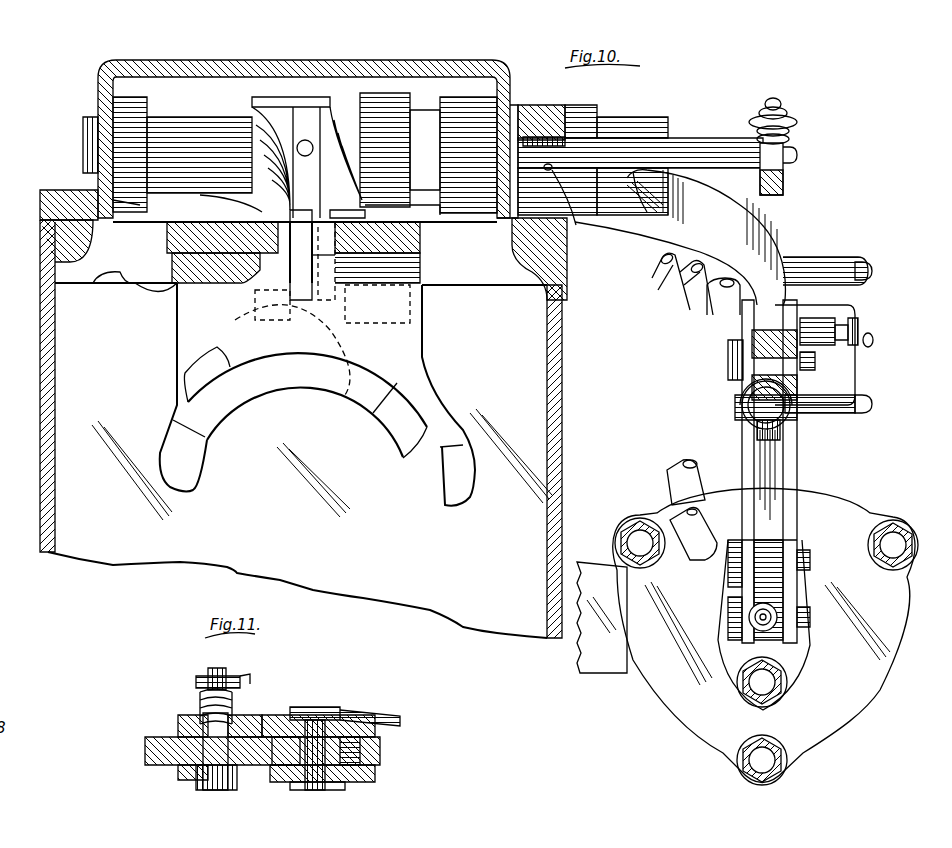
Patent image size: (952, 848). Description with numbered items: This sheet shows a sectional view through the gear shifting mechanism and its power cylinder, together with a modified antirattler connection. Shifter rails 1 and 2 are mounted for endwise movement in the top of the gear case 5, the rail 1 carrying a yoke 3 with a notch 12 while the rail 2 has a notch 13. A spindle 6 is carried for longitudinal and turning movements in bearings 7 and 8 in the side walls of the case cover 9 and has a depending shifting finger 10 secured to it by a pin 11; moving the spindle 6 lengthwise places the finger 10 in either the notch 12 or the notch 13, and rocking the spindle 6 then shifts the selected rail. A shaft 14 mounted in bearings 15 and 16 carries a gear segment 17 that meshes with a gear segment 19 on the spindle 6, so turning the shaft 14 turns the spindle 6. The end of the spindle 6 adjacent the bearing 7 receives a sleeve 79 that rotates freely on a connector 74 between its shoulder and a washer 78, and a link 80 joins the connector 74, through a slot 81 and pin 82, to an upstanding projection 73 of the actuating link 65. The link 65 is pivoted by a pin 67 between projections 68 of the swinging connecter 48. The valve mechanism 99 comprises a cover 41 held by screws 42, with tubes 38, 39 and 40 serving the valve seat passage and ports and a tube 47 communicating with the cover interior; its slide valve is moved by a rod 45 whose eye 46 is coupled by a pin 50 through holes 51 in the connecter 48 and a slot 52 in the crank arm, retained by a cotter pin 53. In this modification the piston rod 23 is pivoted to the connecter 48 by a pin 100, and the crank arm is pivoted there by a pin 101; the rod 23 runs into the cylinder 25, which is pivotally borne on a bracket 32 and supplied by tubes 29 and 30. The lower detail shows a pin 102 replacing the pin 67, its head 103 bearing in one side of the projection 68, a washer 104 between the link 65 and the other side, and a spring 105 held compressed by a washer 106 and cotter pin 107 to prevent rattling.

In FIG. 10, the shifter rail 1 is at (175, 236).
In FIG. 10, the shifter rail 2 is at (405, 262).
In FIG. 10, the yoke 3 is at (228, 407).
In FIG. 10, the gear case 5 is at (55, 320).
In FIG. 10, the spindle 6 is at (208, 125).
In FIG. 10, the bearing 7 is at (440, 405).
In FIG. 10, the bearing 8 is at (145, 108).
In FIG. 10, the case cover 9 is at (246, 73).
In FIG. 10, the shifting finger 10 is at (295, 272).
In FIG. 10, the pin 11 is at (313, 148).
In FIG. 10, the notch 12 is at (318, 310).
In FIG. 10, the notch 13 is at (326, 250).
In FIG. 10, the shaft 14 is at (210, 194).
In FIG. 10, the bearing 15 is at (580, 118).
In FIG. 10, the bearing 16 is at (140, 200).
In FIG. 10, the gear segment 17 is at (346, 214).
In FIG. 10, the gear segment 19 is at (380, 203).
In FIG. 10, the connecting rod 23 is at (768, 630).
In FIG. 10, the cylinder 25 is at (675, 720).
In FIG. 10, the tube 29 is at (688, 548).
In FIG. 10, the tube 30 is at (668, 483).
In FIG. 10, the bracket 32 is at (605, 670).
In FIG. 10, the tube 38 is at (690, 300).
In FIG. 10, the tube 39 is at (718, 305).
In FIG. 10, the tube 40 is at (672, 285).
In FIG. 10, the cover 41 is at (825, 257).
In FIG. 10, the screws 42 is at (873, 270).
In FIG. 11, the rod 45 is at (385, 716).
In FIG. 10, the eye 46 is at (818, 318).
In FIG. 10, the tube 47 is at (866, 347).
In FIG. 11, the swinging connecter 48 is at (345, 755).
In FIG. 10, the pin 50 is at (818, 360).
In FIG. 11, the pin 50 is at (312, 788).
In FIG. 11, the holes 51 is at (302, 720).
In FIG. 11, the slot 52 is at (282, 782).
In FIG. 11, the cotter pin 53 is at (332, 785).
In FIG. 10, the actuating link 65 is at (765, 330).
In FIG. 11, the actuating link 65 is at (146, 753).
In FIG. 10, the pin 67 is at (730, 362).
In FIG. 10, the projections 68 is at (742, 392).
In FIG. 11, the projections 68 is at (180, 716).
In FIG. 10, the projection 73 is at (783, 170).
In FIG. 10, the connector 74 is at (530, 125).
In FIG. 10, the washer 78 is at (786, 512).
In FIG. 10, the sleeve 79 is at (740, 418).
In FIG. 10, the link 80 is at (708, 150).
In FIG. 10, the slot 81 is at (556, 135).
In FIG. 10, the pin 82 is at (557, 203).
In FIG. 10, the valve mechanism 99 is at (850, 295).
In FIG. 10, the pin 100 is at (732, 611).
In FIG. 10, the pin 101 is at (735, 560).
In FIG. 11, the pin 102 is at (218, 672).
In FIG. 11, the head 103 is at (214, 782).
In FIG. 11, the washer 104 is at (250, 726).
In FIG. 11, the spring 105 is at (238, 696).
In FIG. 11, the washer 106 is at (200, 680).
In FIG. 11, the cotter pin 107 is at (202, 676).